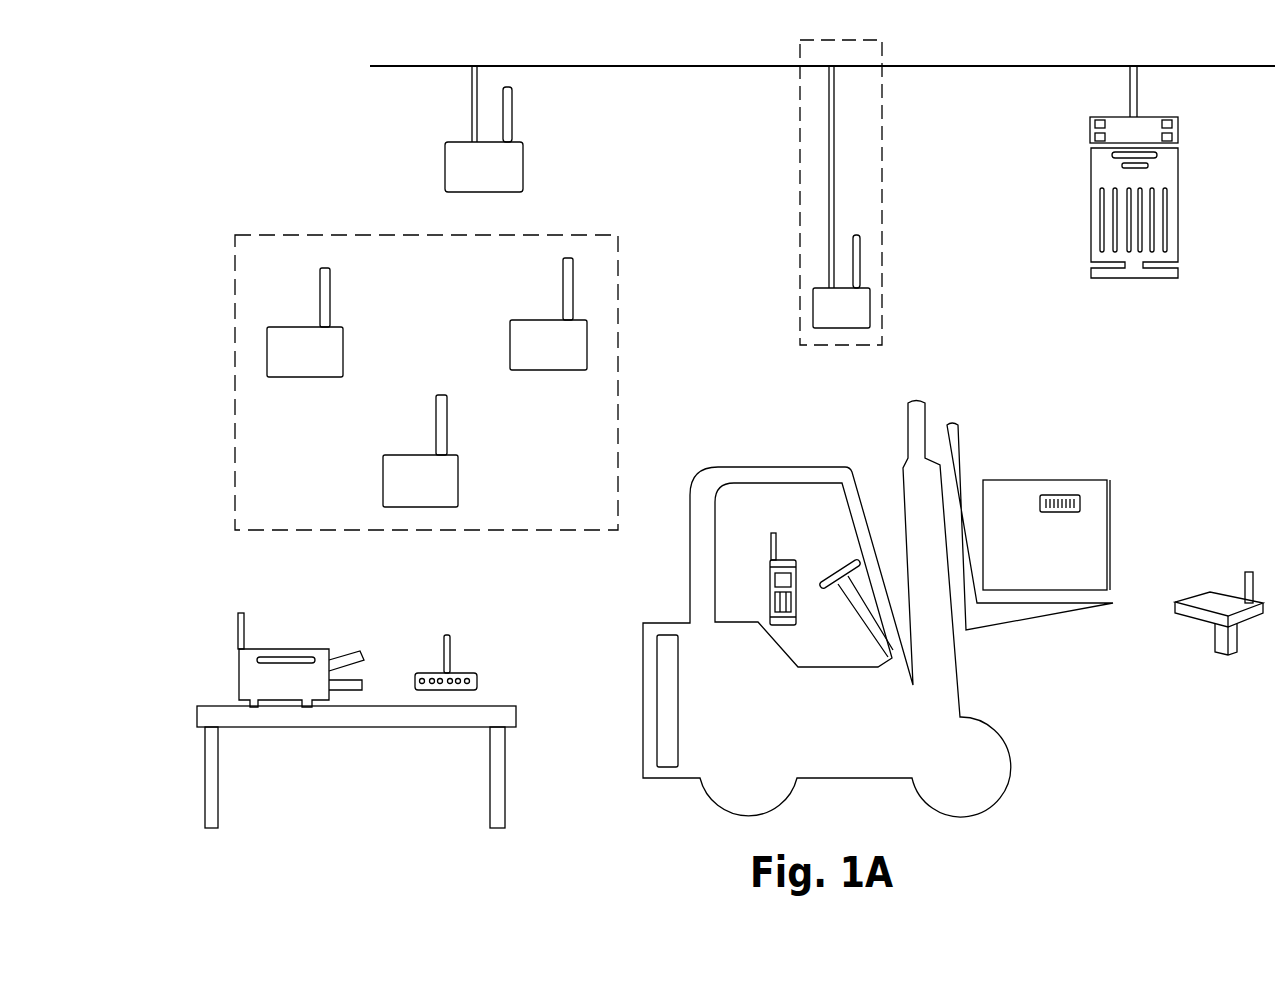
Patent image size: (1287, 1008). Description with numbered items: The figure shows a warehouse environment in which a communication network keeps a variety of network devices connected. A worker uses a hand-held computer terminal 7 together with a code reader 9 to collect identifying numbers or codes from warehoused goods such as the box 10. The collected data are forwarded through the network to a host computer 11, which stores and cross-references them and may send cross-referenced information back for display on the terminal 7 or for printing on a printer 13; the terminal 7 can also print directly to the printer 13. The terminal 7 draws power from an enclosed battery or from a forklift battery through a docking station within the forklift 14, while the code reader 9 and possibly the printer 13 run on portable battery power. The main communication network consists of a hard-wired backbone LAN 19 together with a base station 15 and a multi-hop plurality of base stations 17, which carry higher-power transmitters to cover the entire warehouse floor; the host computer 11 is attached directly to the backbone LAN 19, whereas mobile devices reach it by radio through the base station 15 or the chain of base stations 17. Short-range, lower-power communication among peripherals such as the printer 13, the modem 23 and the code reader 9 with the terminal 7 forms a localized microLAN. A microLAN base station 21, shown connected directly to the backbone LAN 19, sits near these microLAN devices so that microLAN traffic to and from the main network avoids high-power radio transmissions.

The computer terminal 7 is at (787, 558).
The code reader 9 is at (1198, 625).
The box 10 is at (1031, 480).
The host computer 11 is at (1178, 170).
The printer 13 is at (290, 649).
The forklift 14 is at (743, 465).
The base station 15 is at (527, 165).
The base stations 17 is at (618, 310).
The backbone LAN 19 is at (935, 67).
The microLAN base station 21 is at (872, 305).
The modem 23 is at (465, 672).